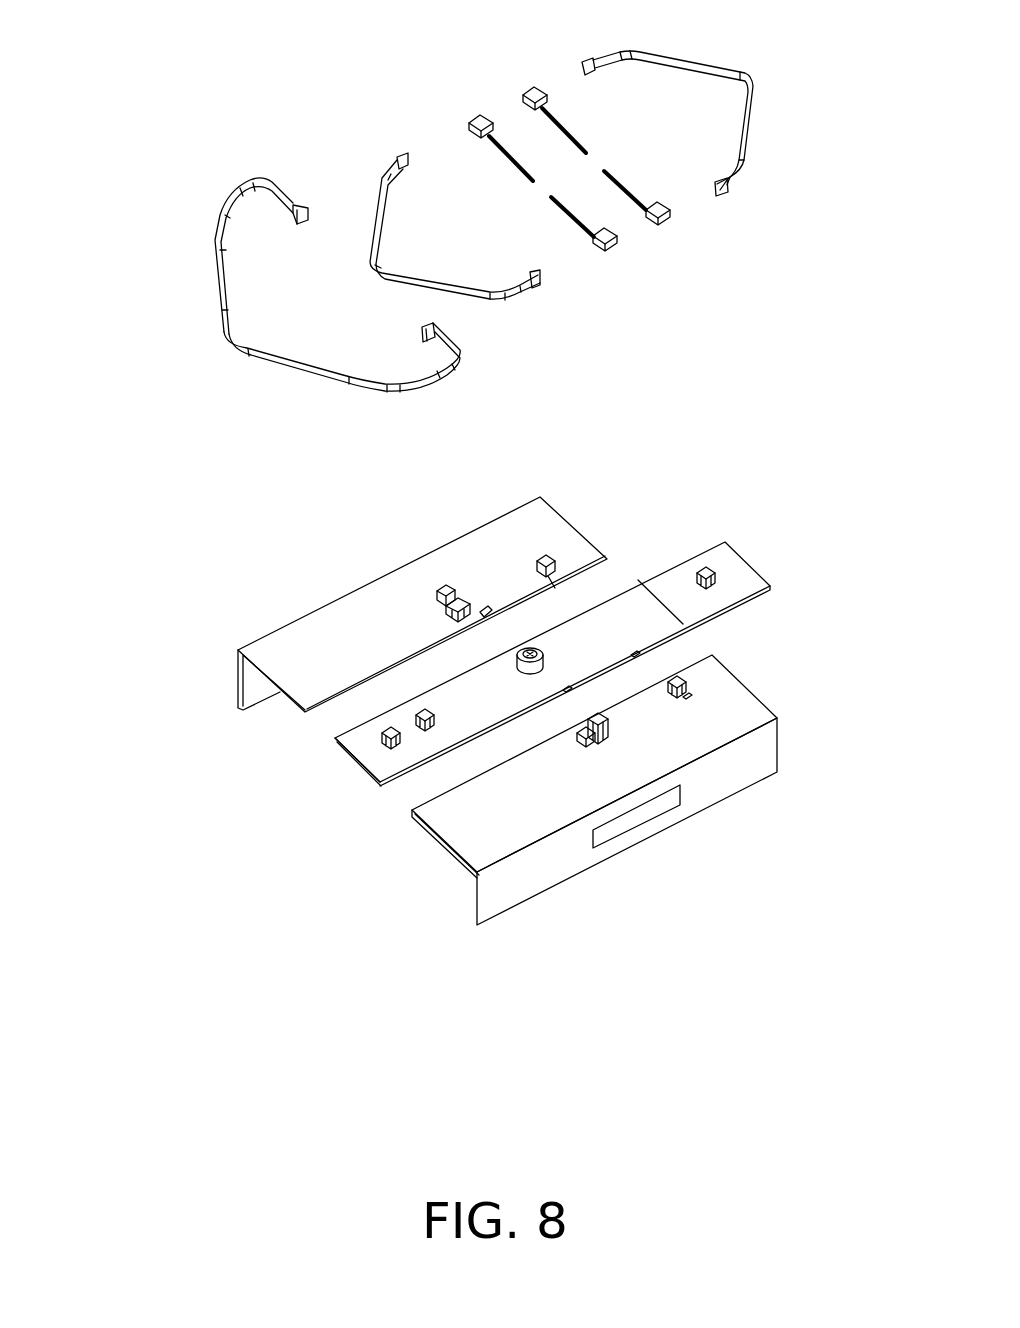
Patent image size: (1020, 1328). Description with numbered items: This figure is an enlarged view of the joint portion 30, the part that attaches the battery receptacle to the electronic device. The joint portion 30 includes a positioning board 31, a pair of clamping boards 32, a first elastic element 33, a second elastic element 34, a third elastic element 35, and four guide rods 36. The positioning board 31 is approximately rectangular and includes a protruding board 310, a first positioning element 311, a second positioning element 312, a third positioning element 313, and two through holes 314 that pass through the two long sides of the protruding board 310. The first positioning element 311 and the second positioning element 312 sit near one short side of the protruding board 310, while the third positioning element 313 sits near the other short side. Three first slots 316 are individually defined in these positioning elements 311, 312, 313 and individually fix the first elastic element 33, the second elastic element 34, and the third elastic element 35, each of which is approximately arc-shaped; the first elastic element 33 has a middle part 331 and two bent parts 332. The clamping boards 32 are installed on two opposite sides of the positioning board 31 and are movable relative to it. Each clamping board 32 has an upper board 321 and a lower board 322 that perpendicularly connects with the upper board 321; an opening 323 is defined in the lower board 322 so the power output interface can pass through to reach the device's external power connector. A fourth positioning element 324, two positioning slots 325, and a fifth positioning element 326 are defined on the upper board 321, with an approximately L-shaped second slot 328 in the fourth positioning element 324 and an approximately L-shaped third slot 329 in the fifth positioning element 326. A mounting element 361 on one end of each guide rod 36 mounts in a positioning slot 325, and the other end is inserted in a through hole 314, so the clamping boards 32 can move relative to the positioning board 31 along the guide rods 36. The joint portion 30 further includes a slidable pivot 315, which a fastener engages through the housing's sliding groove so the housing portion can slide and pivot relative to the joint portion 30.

The joint portion 30 is at (190, 58).
The positioning board 31 is at (745, 575).
The protruding board 310 is at (628, 612).
The first positioning element 311 is at (388, 745).
The second positioning element 312 is at (410, 718).
The third positioning element 313 is at (710, 568).
The through hole 314 is at (713, 632).
The slidable pivot 315 is at (530, 648).
The first slot 316 is at (388, 736).
The clamping board 32 is at (313, 652).
The upper board 321 is at (470, 820).
The lower board 322 is at (532, 878).
The opening 323 is at (610, 828).
The fourth positioning element 324 is at (438, 598).
The positioning slot 325 is at (605, 720).
The fifth positioning element 326 is at (686, 694).
The second slot 328 is at (440, 590).
The third slot 329 is at (688, 682).
The first elastic element 33 is at (216, 268).
The middle part 331 is at (228, 345).
The bent part 332 is at (301, 193).
The second elastic element 34 is at (516, 283).
The third elastic element 35 is at (737, 178).
The guide rod 36 is at (512, 153).
The mounting element 361 is at (612, 248).